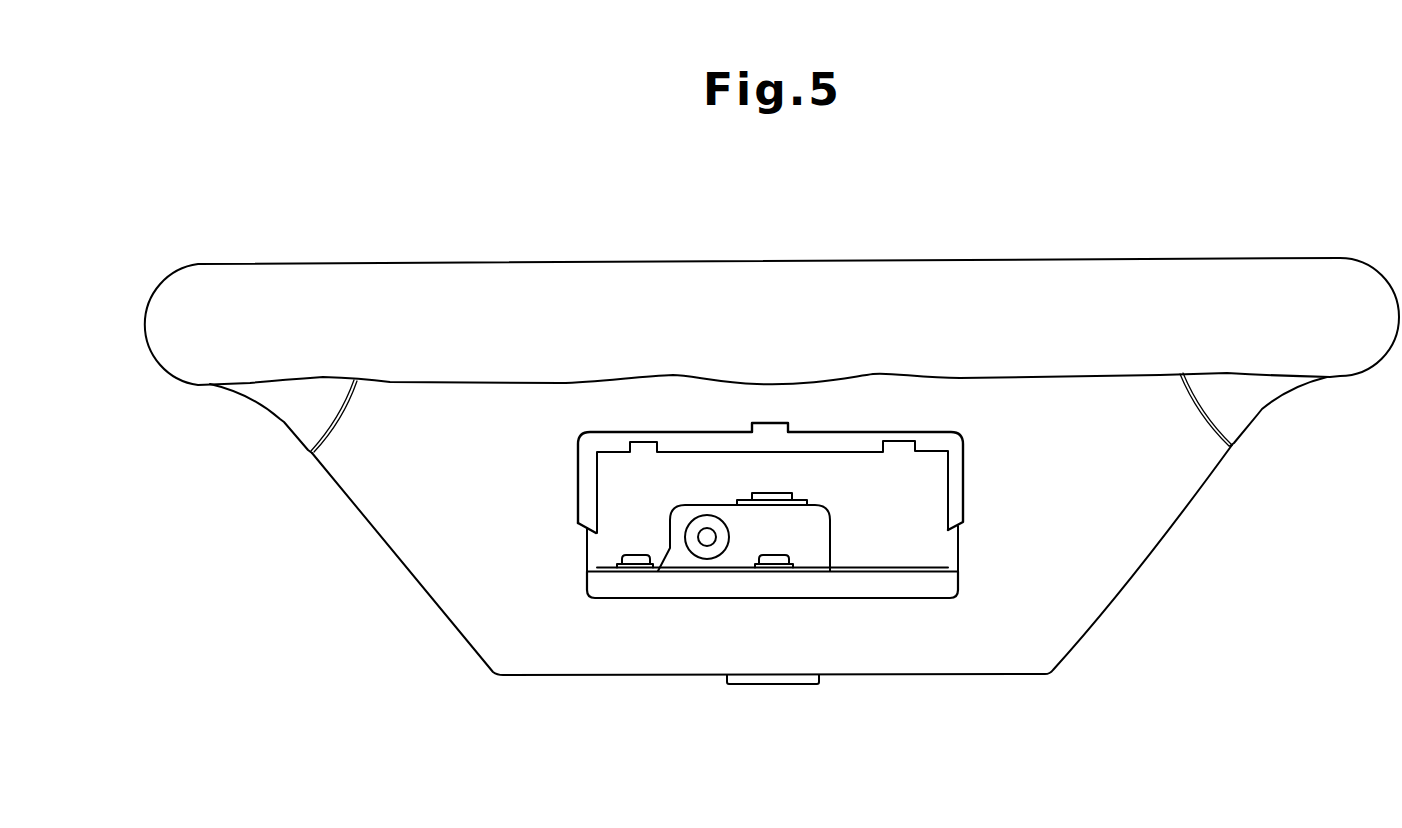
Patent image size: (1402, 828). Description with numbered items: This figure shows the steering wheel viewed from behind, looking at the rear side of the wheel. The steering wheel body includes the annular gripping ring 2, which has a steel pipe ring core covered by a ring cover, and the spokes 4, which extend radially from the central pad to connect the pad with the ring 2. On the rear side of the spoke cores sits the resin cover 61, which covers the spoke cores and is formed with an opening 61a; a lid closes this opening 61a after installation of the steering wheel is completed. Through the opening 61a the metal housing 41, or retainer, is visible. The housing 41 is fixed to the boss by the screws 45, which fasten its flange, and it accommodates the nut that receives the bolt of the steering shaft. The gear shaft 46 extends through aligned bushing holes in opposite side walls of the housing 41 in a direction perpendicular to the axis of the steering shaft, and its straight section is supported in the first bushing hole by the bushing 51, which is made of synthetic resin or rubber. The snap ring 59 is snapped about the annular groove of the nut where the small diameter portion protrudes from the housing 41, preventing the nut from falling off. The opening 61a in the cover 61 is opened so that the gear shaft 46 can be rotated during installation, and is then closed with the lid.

The gripping ring 2 is at (1095, 258).
The spokes 4 is at (237, 397).
The housing 41 is at (830, 527).
The screws 45 is at (640, 555).
The gear shaft 46 is at (712, 529).
The bushing 51 is at (699, 523).
The snap ring 59 is at (807, 502).
The resin cover 61 is at (1108, 575).
The opening 61a is at (947, 545).